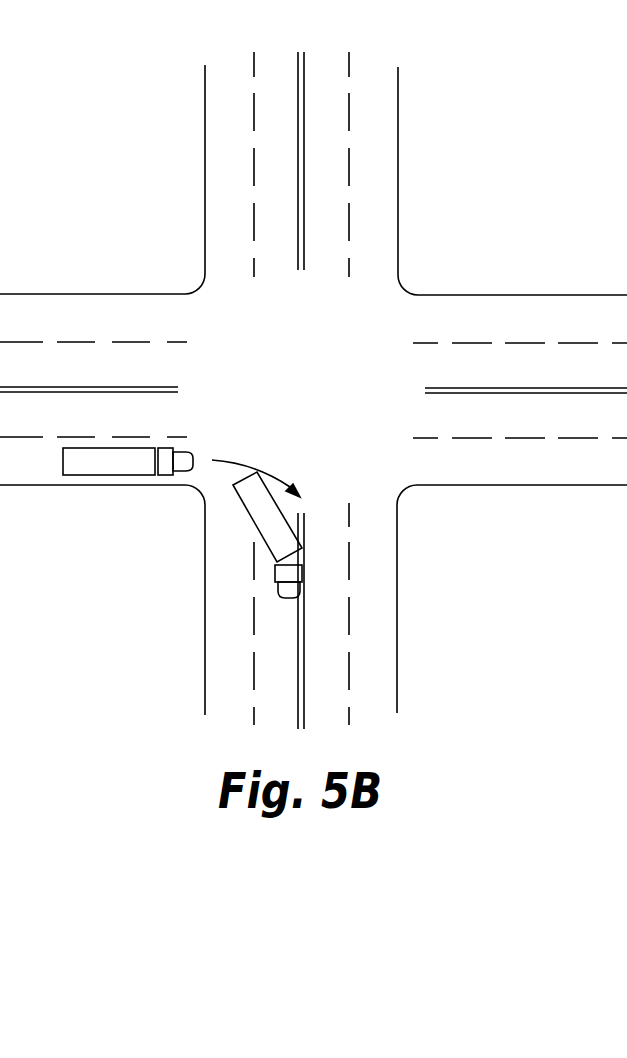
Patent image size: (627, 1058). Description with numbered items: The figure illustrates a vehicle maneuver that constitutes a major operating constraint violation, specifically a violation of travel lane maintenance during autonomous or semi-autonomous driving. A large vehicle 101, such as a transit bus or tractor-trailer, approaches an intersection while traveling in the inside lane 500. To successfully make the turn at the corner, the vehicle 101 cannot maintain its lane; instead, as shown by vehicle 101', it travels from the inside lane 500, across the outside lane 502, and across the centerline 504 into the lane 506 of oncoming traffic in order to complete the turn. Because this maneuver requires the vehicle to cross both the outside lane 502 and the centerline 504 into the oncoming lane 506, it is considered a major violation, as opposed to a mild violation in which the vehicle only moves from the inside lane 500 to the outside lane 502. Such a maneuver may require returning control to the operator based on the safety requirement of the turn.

The vehicle 101 is at (153, 422).
The vehicle after turning 101' is at (288, 526).
The inside lane 500 is at (45, 462).
The outside lane 502 is at (227, 595).
The centerline 504 is at (307, 688).
The lane of oncoming traffic 506 is at (325, 592).